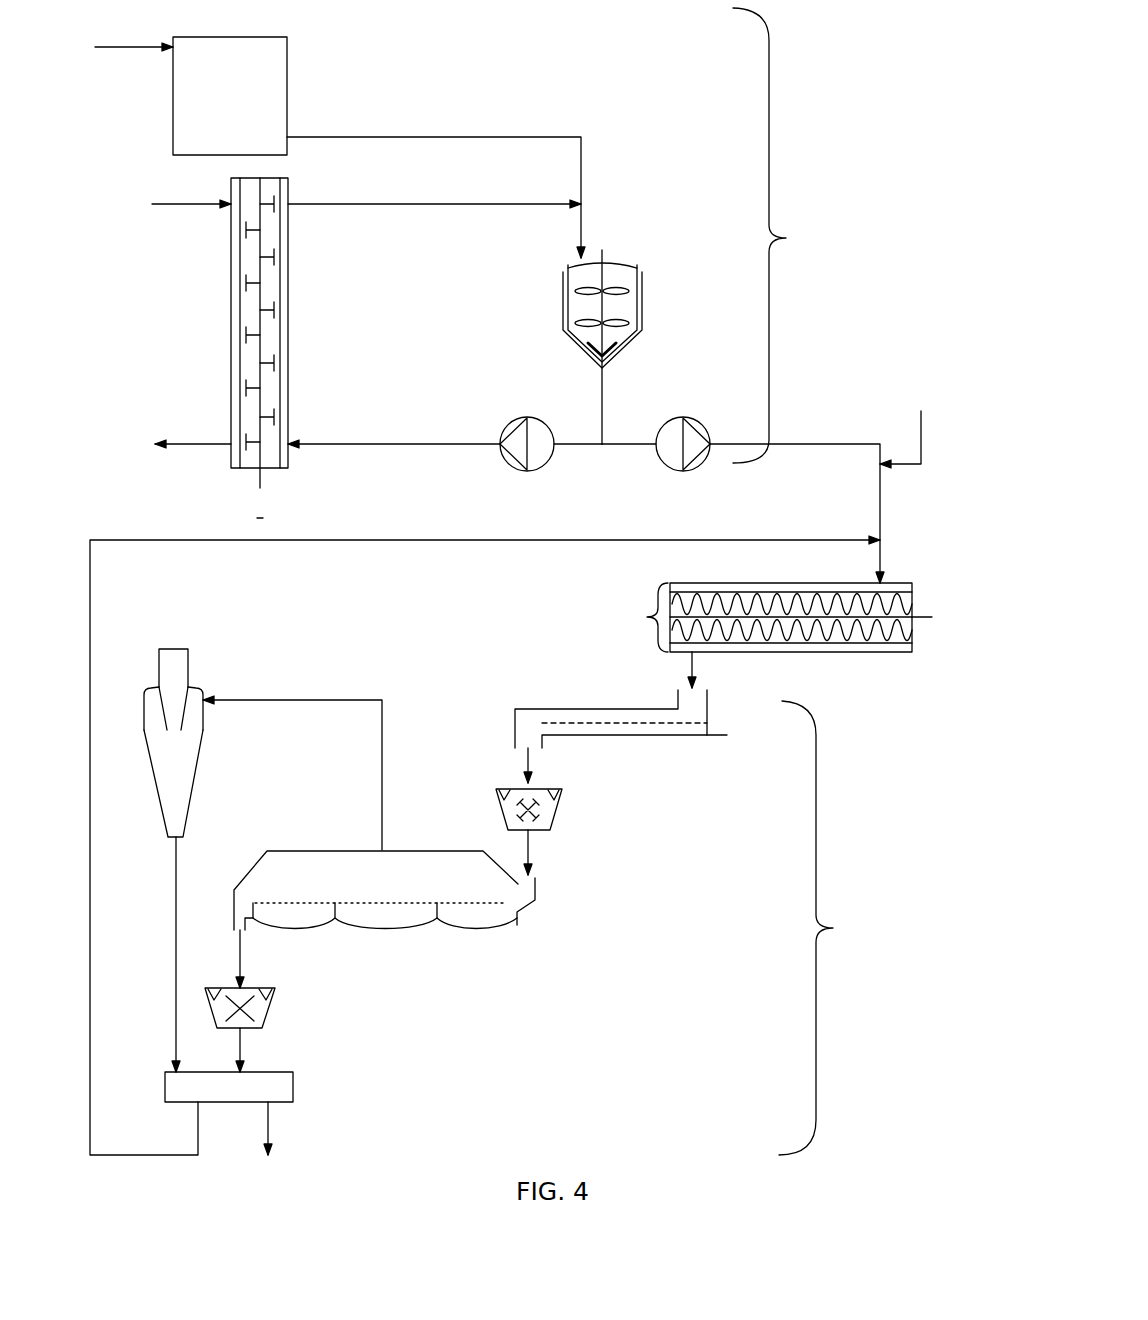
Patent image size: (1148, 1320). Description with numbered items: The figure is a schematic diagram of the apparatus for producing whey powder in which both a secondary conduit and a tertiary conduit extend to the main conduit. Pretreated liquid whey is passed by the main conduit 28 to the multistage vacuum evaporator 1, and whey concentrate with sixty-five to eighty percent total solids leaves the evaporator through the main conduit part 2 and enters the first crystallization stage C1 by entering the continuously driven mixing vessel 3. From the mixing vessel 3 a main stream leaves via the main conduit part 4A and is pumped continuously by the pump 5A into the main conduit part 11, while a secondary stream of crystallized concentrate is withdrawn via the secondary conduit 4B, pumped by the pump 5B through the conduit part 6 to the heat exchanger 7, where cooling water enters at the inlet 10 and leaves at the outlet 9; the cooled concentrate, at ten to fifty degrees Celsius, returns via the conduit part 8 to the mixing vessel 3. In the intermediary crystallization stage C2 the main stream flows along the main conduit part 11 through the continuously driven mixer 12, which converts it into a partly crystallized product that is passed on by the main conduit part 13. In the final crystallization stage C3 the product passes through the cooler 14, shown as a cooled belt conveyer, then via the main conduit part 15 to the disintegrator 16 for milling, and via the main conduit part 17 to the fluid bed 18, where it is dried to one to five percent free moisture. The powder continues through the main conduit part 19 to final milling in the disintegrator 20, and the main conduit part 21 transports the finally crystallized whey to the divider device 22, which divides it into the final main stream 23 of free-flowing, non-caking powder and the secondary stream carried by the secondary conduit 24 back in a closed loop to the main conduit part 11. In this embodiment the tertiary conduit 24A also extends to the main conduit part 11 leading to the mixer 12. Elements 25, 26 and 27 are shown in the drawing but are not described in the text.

The multistage vacuum evaporator 1 is at (289, 56).
The main conduit part 2 is at (579, 177).
The mixing vessel 3 is at (645, 330).
The main conduit part 4A is at (618, 453).
The secondary conduit 4B is at (585, 453).
The pump 5A is at (668, 415).
The pump 5B is at (543, 415).
The conduit part 6 is at (446, 455).
The heat exchanger 7 is at (230, 288).
The conduit part 8 is at (460, 203).
The outlet 9 is at (183, 447).
The inlet 10 is at (169, 203).
The main conduit part 11 is at (883, 510).
The continuously driven mixer 12 is at (862, 656).
The main conduit part 13 is at (700, 679).
The cooler 14 is at (506, 737).
The main conduit part 15 is at (536, 773).
The disintegrator 16 is at (494, 809).
The main conduit part 17 is at (536, 853).
The fluid bed 18 is at (374, 926).
The main conduit part 19 is at (230, 960).
The disintegrator 20 is at (278, 1010).
The main conduit part 21 is at (250, 1054).
The divider device 22 is at (297, 1094).
The final main stream 23 is at (276, 1130).
The secondary conduit 24 is at (92, 880).
The secondary conduit 24A is at (911, 424).
The exhaust gas line 25 is at (383, 766).
The cyclone 26 is at (204, 750).
The collected dust line 27 is at (178, 880).
The main conduit 28 is at (113, 46).
The first crystallization stage C1 is at (787, 235).
The intermediary crystallization stage C2 is at (636, 617).
The final crystallization stage C3 is at (829, 928).